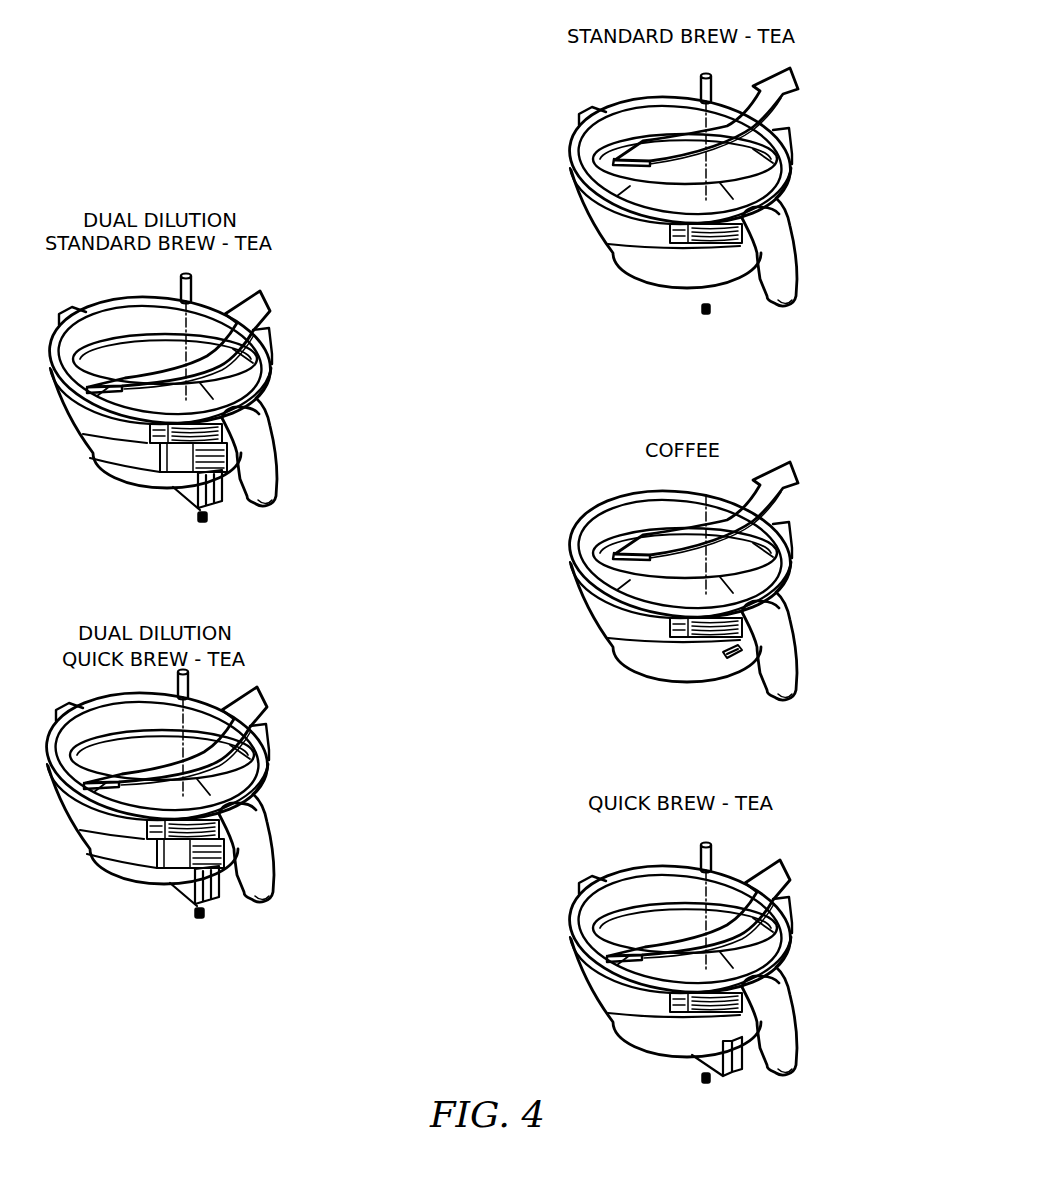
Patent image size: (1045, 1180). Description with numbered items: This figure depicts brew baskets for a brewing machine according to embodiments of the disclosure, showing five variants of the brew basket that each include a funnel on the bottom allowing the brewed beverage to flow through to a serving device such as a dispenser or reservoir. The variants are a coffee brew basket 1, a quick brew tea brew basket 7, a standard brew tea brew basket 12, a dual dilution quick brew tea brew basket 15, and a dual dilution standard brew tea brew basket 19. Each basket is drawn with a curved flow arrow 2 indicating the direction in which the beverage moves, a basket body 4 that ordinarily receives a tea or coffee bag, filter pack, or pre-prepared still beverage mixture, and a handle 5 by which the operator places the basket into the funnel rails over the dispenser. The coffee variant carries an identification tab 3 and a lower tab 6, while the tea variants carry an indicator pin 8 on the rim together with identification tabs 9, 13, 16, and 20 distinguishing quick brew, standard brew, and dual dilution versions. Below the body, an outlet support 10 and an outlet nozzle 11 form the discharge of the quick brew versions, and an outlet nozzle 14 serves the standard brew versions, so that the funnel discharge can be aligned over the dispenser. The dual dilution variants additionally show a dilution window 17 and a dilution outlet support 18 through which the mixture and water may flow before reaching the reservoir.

The coffee brew funnel assembly 1 is at (864, 450).
The flow direction arrow 2 is at (787, 106).
The coffee funnel identification tab 3 is at (790, 542).
The funnel basket body 4 is at (775, 163).
The handle 5 is at (745, 237).
The coffee indicator tab 6 is at (740, 655).
The quick brew tea funnel assembly 7 is at (867, 802).
The tea funnel indicator pin 8 is at (713, 82).
The quick brew tea identification tab 9 is at (790, 912).
The quick brew outlet support 10 is at (713, 1028).
The quick brew outlet nozzle 11 is at (708, 1080).
The standard brew tea funnel assembly 12 is at (847, 33).
The standard brew tea identification tab 13 is at (790, 150).
The standard brew outlet nozzle 14 is at (707, 312).
The dual dilution quick brew tea funnel assembly 15 is at (334, 638).
The dual dilution quick brew identification tab 16 is at (267, 742).
The dilution window 17 is at (228, 448).
The dilution outlet support 18 is at (220, 490).
The dual dilution standard brew tea funnel assembly 19 is at (347, 230).
The dual dilution standard brew identification tab 20 is at (270, 345).